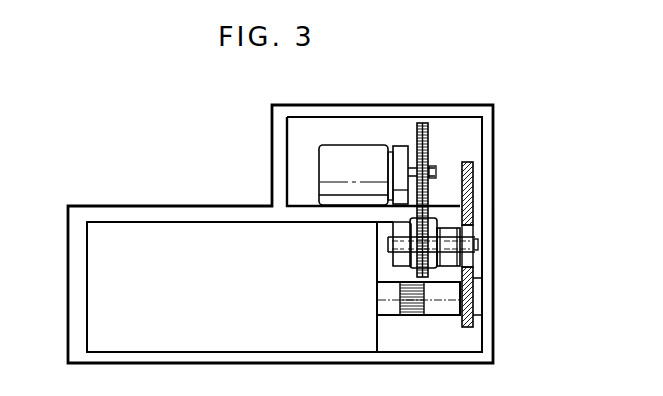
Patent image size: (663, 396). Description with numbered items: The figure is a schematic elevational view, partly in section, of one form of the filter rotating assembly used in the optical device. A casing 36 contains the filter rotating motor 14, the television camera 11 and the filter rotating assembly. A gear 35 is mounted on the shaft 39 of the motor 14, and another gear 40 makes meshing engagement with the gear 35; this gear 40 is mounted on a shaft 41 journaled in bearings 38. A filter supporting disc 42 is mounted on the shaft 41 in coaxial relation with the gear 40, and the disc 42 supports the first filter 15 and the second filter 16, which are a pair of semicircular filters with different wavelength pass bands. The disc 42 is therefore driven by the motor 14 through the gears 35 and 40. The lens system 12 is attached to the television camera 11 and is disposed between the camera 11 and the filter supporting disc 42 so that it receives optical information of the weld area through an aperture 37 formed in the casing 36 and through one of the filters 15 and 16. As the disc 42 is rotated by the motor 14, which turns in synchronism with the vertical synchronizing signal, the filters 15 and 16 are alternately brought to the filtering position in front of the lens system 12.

The television camera 11 is at (94, 276).
The lens system 12 is at (442, 315).
The filter rotating motor 14 is at (356, 158).
The first filter 15 is at (474, 190).
The second filter 16 is at (474, 311).
The gear 35 is at (428, 130).
The casing 36 is at (493, 128).
The aperture 37 is at (483, 288).
The bearings 38 is at (393, 264).
The shaft of the motor 39 is at (436, 170).
The gear 40 is at (437, 271).
The shaft 41 is at (386, 244).
The filter supporting disc 42 is at (474, 230).